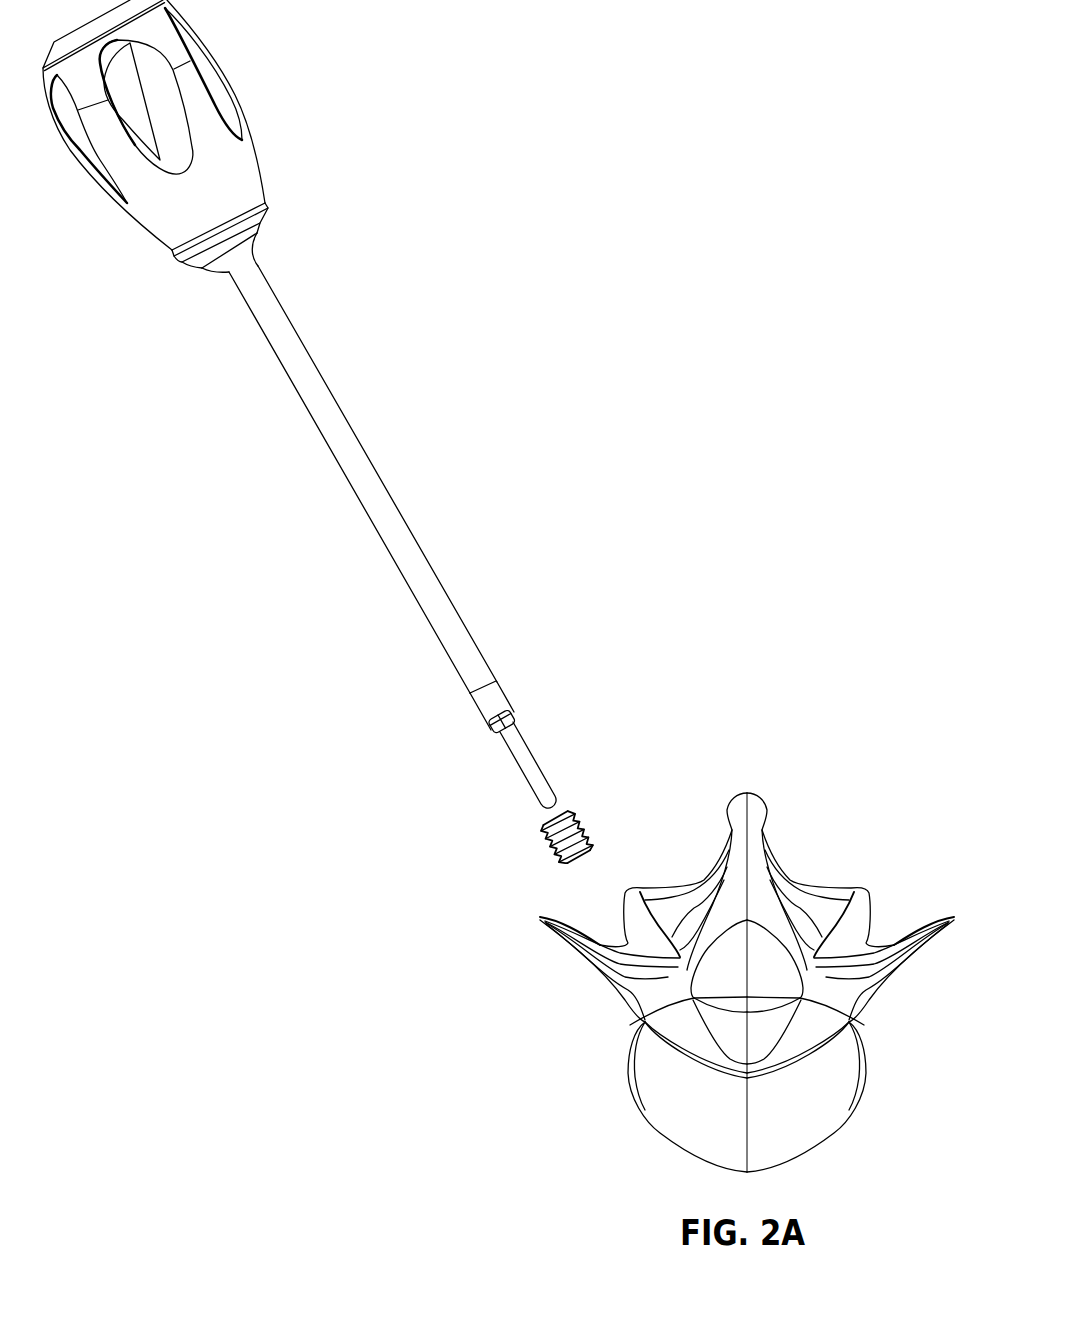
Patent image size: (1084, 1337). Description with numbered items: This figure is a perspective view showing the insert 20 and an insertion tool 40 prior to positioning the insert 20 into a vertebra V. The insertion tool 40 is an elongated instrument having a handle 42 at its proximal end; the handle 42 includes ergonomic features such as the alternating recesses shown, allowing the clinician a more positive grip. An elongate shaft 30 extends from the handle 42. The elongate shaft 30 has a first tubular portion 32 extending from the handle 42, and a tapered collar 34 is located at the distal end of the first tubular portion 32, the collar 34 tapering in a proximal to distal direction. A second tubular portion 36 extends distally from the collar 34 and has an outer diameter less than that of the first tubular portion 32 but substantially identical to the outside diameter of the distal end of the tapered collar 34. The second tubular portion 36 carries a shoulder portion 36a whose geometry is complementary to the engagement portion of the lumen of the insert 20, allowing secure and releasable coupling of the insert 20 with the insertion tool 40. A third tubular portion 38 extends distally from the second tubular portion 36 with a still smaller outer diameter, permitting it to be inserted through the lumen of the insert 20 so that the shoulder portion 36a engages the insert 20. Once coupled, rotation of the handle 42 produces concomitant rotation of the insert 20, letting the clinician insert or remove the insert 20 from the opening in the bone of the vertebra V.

The insertion tool 40 is at (313, 283).
The handle 42 is at (238, 183).
The elongate shaft 30 is at (398, 452).
The first tubular portion 32 is at (403, 573).
The tapered collar 34 is at (480, 698).
The second tubular portion 36 is at (497, 700).
The shoulder portion 36a is at (493, 732).
The third tubular portion 38 is at (527, 768).
The insert 20 is at (600, 809).
The vertebra V is at (757, 815).